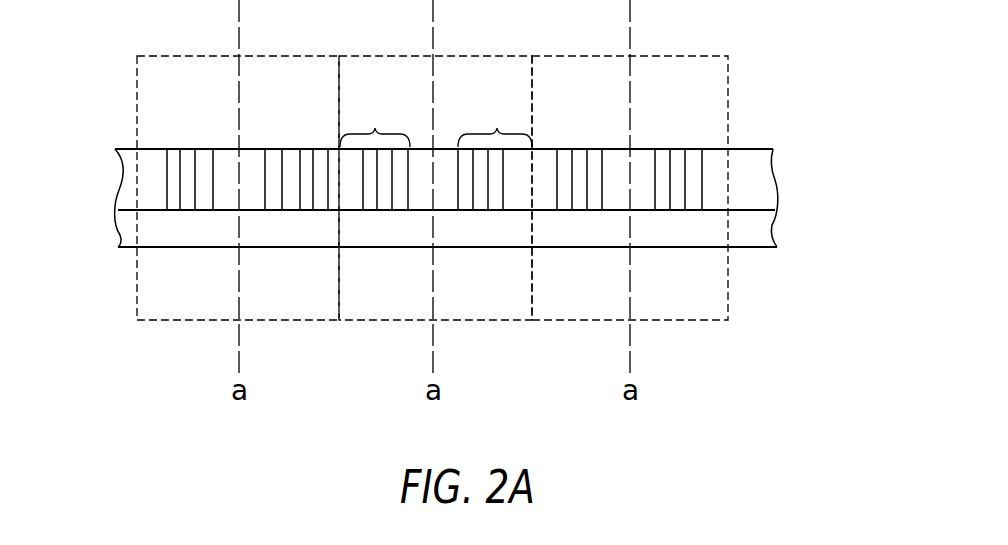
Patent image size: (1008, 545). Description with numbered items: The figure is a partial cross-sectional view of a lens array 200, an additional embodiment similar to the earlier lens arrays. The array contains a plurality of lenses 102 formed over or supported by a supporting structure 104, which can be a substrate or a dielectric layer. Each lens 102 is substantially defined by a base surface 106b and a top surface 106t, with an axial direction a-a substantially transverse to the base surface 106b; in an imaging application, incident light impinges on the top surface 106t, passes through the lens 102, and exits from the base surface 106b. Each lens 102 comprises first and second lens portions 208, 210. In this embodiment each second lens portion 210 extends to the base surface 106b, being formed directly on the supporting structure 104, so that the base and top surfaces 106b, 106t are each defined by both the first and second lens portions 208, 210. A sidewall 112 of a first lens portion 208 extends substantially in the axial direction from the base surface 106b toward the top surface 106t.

The lens 102 is at (154, 50).
The supporting structure 104 is at (760, 228).
The top surface 106t is at (124, 148).
The base surface 106b is at (130, 212).
The sidewall 112 is at (407, 197).
The lens array 200 is at (461, 181).
The first lens portion 208 is at (252, 163).
The second lens portion 210 is at (436, 123).